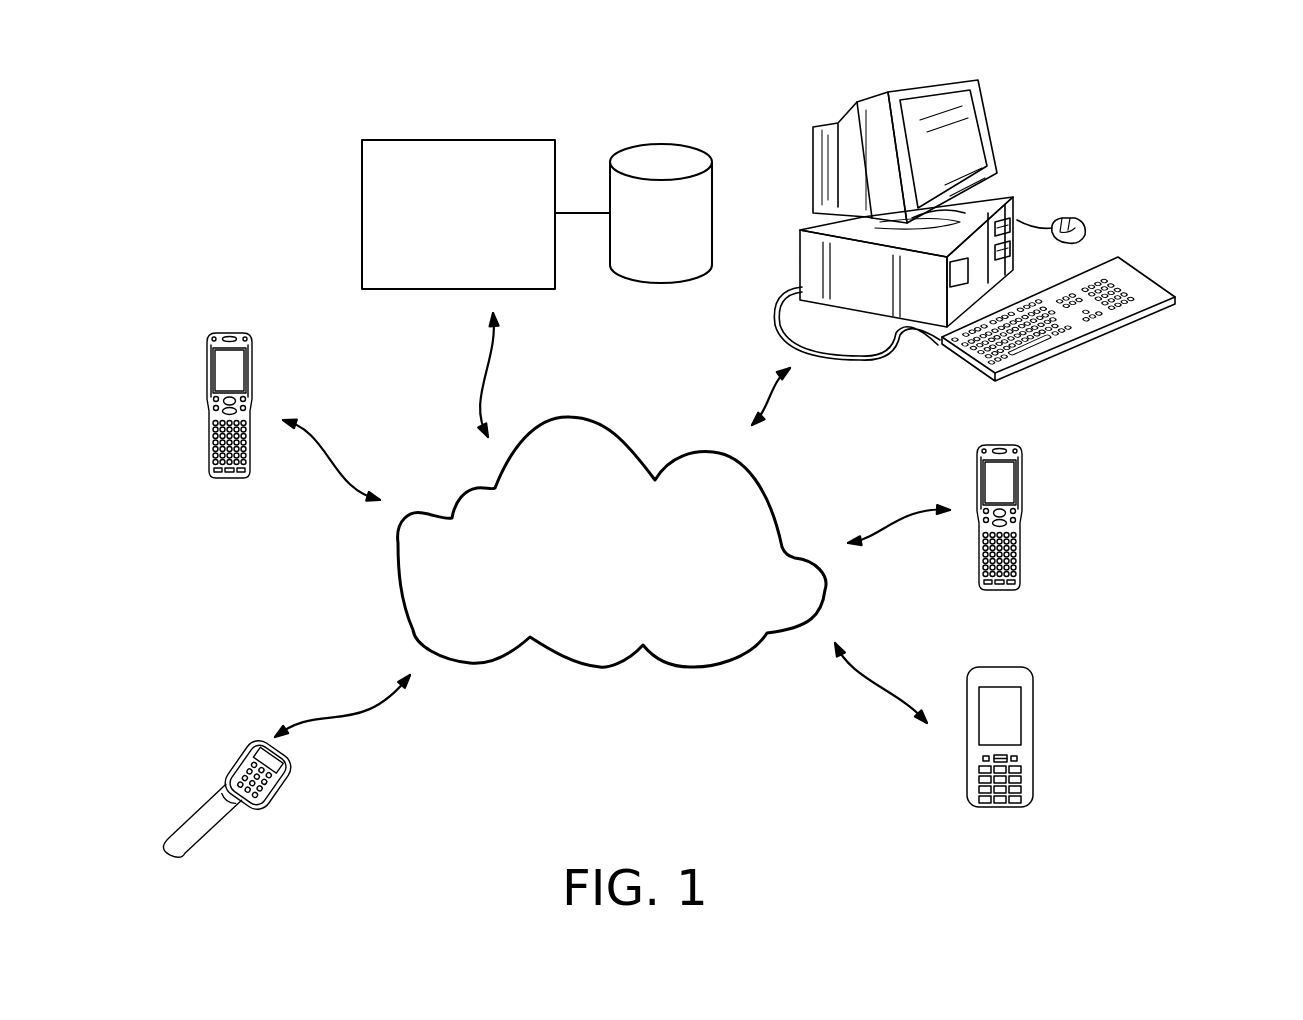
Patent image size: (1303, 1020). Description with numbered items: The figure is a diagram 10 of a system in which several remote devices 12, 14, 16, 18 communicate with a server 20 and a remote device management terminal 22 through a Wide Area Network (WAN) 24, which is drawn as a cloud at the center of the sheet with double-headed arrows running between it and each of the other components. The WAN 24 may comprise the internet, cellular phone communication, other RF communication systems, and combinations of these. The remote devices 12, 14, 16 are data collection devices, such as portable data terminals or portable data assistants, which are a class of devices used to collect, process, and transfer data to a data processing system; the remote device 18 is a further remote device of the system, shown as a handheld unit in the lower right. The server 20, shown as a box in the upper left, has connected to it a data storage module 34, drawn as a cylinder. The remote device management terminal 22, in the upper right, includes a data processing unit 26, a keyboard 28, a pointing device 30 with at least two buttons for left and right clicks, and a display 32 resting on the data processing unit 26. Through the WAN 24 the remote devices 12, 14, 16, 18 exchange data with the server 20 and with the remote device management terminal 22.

The diagram 10 is at (140, 155).
The remote device 12 is at (207, 385).
The remote device 14 is at (1022, 480).
The remote device 16 is at (172, 826).
The remote device 18 is at (1033, 713).
The server 20 is at (362, 208).
The remote device management terminal 22 is at (1188, 120).
The Wide Area Network (WAN) 24 is at (627, 557).
The data processing unit 26 is at (1012, 203).
The keyboard 28 is at (1150, 280).
The pointing device 30 is at (1087, 233).
The display 32 is at (982, 91).
The data storage module 34 is at (637, 148).